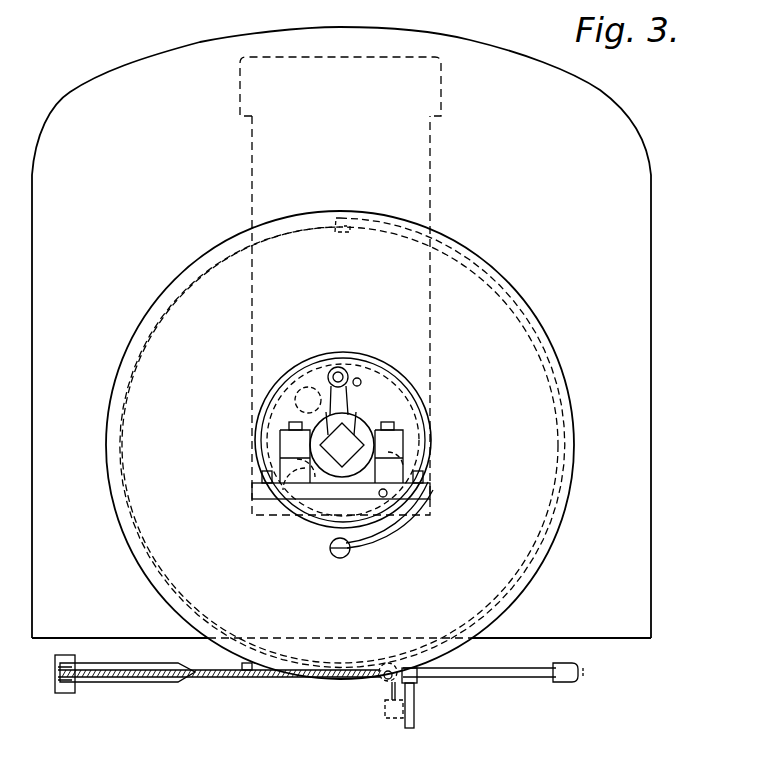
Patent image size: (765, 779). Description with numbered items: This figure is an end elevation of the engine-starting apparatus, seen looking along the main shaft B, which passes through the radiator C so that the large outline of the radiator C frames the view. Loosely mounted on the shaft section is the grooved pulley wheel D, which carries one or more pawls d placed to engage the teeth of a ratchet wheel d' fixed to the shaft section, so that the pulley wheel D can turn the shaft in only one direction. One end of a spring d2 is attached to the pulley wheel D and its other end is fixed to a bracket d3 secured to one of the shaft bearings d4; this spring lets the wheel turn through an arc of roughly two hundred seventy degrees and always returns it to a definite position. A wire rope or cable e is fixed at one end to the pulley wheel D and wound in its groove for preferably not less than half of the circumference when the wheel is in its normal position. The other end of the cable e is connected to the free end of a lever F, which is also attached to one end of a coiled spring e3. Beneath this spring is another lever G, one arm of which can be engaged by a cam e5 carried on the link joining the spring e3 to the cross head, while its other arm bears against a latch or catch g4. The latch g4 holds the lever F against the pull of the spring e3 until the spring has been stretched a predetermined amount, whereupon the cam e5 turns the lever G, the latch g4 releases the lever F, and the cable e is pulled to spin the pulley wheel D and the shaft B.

The radiator C is at (641, 246).
The pulley wheel D is at (552, 471).
The main shaft B is at (342, 445).
The pawls d is at (360, 386).
The ratchet wheel d' is at (280, 393).
The spring d2 is at (430, 396).
The bracket d3 is at (333, 395).
The shaft bearing d4 is at (396, 455).
The wire rope or cable e is at (207, 682).
The coiled spring e3 is at (392, 688).
The cam e5 is at (385, 708).
The latch or catch g4 is at (416, 685).
The lever F is at (455, 683).
The lever G is at (410, 720).